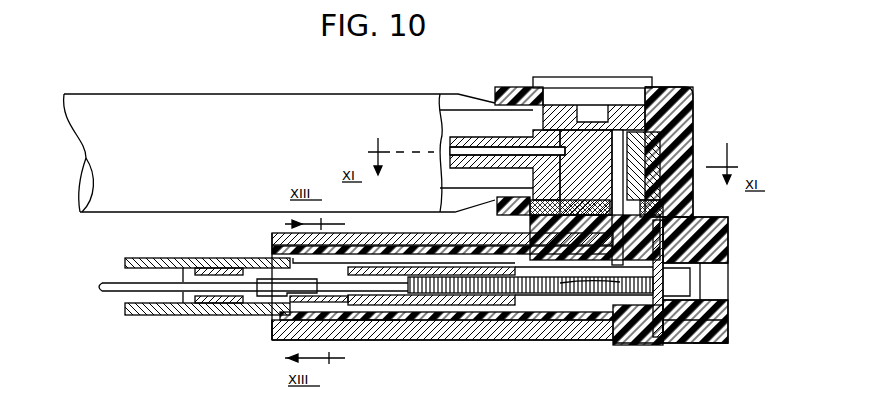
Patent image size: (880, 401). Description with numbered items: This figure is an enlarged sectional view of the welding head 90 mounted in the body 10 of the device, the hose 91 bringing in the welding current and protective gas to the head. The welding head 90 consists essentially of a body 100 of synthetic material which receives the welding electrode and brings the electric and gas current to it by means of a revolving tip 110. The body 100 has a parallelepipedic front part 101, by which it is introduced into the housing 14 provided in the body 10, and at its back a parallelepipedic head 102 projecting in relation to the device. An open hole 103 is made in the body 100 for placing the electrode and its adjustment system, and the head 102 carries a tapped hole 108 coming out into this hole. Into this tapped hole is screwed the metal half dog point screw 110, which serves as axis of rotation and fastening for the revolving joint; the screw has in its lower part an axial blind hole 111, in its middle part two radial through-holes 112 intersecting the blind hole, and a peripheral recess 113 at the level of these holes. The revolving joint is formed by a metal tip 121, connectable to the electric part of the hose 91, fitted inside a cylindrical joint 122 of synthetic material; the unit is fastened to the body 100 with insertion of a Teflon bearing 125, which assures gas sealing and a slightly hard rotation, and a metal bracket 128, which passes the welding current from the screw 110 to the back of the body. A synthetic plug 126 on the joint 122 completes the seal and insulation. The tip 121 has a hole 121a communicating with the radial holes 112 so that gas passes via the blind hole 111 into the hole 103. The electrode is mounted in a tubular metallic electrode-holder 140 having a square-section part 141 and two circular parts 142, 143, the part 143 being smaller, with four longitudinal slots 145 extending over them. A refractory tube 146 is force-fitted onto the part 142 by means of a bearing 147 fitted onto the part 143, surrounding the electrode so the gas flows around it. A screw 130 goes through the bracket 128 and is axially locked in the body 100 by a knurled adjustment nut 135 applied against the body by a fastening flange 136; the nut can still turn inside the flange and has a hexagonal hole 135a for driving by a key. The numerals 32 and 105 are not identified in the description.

The hose 91 is at (120, 150).
The contact pin 32 is at (106, 286).
The tube 146 is at (146, 258).
The bearing 147 is at (216, 272).
The part of circular section 143 is at (216, 301).
The part of circular section 142 is at (268, 303).
The outer housing 105 is at (285, 325).
The longitudinal slots 145 is at (357, 328).
The front part 101 is at (420, 325).
The housing 14 is at (464, 325).
The body of the device 10 is at (497, 325).
The open hole 103 is at (540, 300).
The screw 130 is at (578, 284).
The body 100 is at (592, 284).
The axial blind hole 111 is at (632, 338).
The metal bracket 128 is at (655, 342).
The knurled adjustment nut 135 is at (704, 343).
The fastening flange 136 is at (728, 320).
The hexagonal hole 135a is at (705, 286).
The head 102 is at (728, 250).
The bearing 125 is at (695, 215).
The half dog point screw 110 is at (660, 168).
The peripheral recess 113 is at (655, 140).
The cylindrical joint 122 is at (670, 102).
The welding head 90 is at (664, 86).
The radial through-holes 112 is at (617, 150).
The plug 126 is at (568, 78).
The metal tip 121 is at (512, 146).
The hole 121a is at (478, 150).
The part of square section 141 is at (377, 244).
The electrode-holder 140 is at (398, 268).
The tapped hole 108 is at (512, 223).